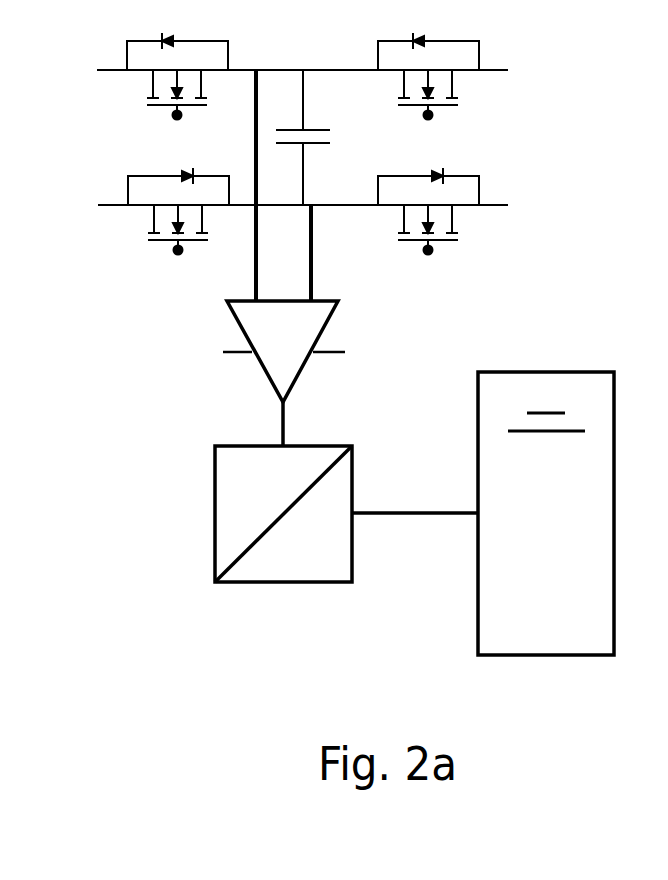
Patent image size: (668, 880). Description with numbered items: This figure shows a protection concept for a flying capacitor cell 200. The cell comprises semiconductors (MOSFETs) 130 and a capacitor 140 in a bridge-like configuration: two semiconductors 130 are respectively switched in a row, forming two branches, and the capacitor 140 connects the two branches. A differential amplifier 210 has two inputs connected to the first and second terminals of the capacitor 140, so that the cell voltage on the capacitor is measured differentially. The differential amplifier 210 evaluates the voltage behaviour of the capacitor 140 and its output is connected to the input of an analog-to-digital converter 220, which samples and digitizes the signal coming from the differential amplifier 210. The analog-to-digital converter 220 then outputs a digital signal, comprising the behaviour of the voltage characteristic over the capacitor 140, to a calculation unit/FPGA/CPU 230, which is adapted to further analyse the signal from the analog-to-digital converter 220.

The semiconductor (MOSFET) 130 is at (303, 143).
The capacitor 140 is at (325, 137).
The measurement circuit 200 is at (275, 185).
The differential amplifier 210 is at (327, 373).
The analog-to-digital converter 220 is at (322, 545).
The calculation unit/FPGA/CPU 230 is at (566, 532).